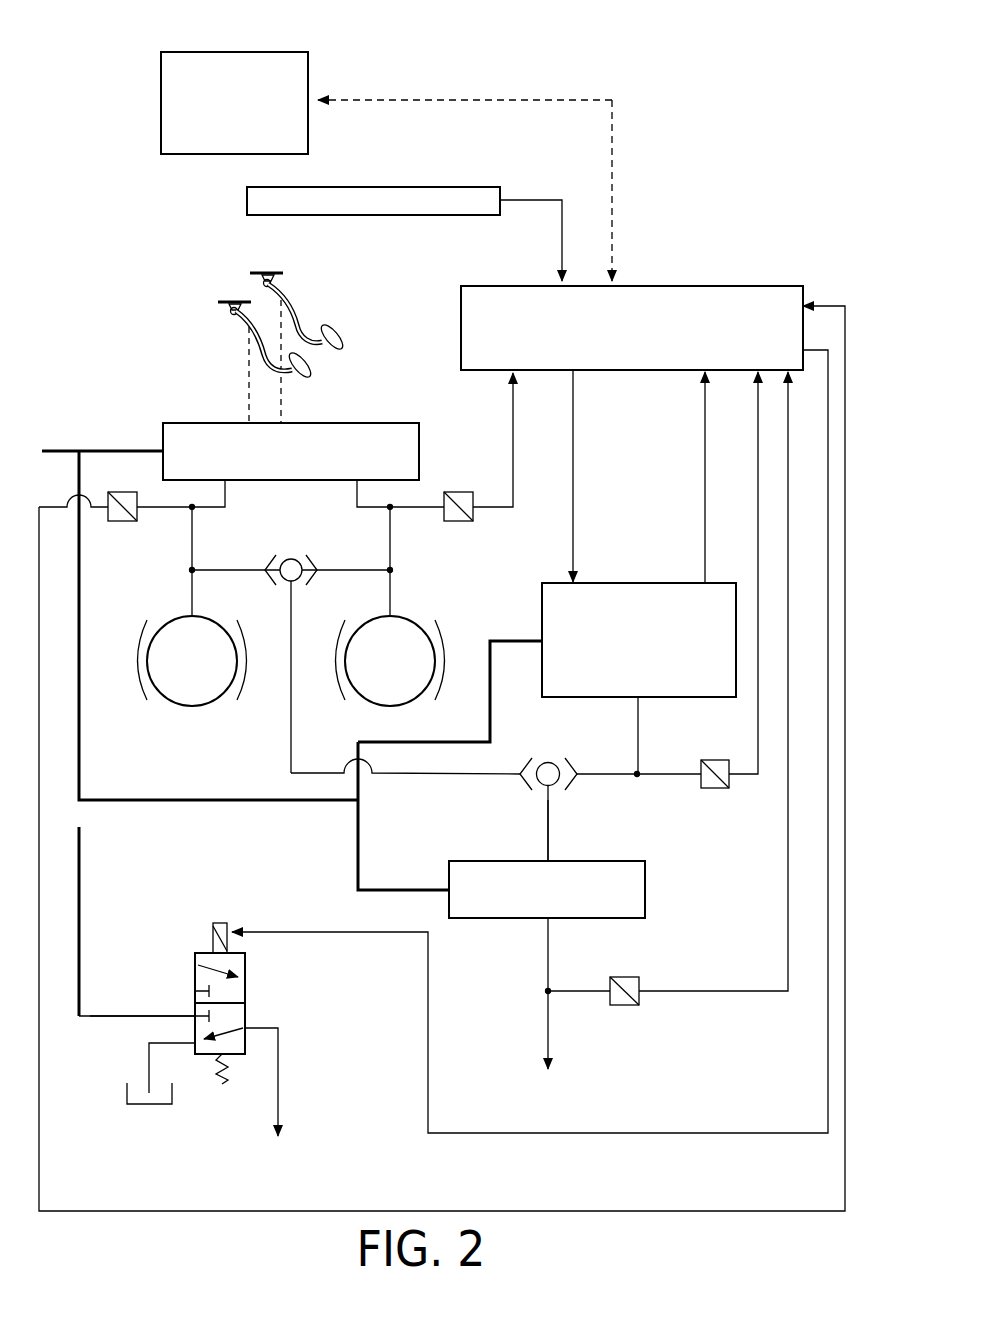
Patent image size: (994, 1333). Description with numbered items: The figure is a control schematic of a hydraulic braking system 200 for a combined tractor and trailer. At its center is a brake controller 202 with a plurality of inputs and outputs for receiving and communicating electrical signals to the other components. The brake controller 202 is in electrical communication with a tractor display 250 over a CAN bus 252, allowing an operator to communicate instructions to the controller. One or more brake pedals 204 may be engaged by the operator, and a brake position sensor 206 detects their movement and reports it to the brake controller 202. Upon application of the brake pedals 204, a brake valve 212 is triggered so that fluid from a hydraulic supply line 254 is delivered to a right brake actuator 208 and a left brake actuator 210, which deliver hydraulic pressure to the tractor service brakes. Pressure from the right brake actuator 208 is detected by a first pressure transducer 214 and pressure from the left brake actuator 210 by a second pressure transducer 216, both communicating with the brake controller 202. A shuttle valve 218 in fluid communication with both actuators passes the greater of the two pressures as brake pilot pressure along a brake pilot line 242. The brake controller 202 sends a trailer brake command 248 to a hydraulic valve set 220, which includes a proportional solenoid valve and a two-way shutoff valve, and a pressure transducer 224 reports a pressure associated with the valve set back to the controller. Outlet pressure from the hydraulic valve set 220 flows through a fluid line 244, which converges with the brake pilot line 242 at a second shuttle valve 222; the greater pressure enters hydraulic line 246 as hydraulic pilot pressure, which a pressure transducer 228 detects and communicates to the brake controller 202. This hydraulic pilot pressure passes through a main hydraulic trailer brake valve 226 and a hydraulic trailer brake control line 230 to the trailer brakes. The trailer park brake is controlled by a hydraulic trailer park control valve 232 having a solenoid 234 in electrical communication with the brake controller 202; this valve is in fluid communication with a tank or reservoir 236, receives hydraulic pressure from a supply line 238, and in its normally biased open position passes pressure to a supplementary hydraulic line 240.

The hydraulic braking system 200 is at (741, 97).
The brake controller 202 is at (694, 286).
The brake pedals 204 is at (250, 273).
The brake position sensor 206 is at (457, 187).
The right brake actuator 208 is at (192, 706).
The left brake actuator 210 is at (405, 617).
The brake valve 212 is at (360, 423).
The first pressure transducer 214 is at (124, 521).
The second pressure transducer 216 is at (457, 492).
The shuttle valve 218 is at (291, 557).
The hydraulic valve set 220 is at (638, 583).
The second shuttle valve 222 is at (546, 758).
The pressure transducer 224 is at (715, 789).
The main hydraulic trailer brake valve 226 is at (645, 890).
The pressure transducer 228 is at (625, 1005).
The hydraulic trailer brake control line 230 is at (546, 1036).
The hydraulic trailer park control valve 232 is at (264, 972).
The solenoid 234 is at (211, 945).
The tank or reservoir 236 is at (148, 1107).
The supply line 238 is at (136, 1013).
The supplementary hydraulic line 240 is at (280, 1074).
The brake pilot line 242 is at (405, 777).
The fluid line 244 is at (602, 776).
The hydraulic line 246 is at (546, 820).
The trailer brake command 248 is at (573, 457).
The tractor display 250 is at (192, 52).
The CAN bus 252 is at (363, 100).
The hydraulic supply line 254 is at (57, 450).